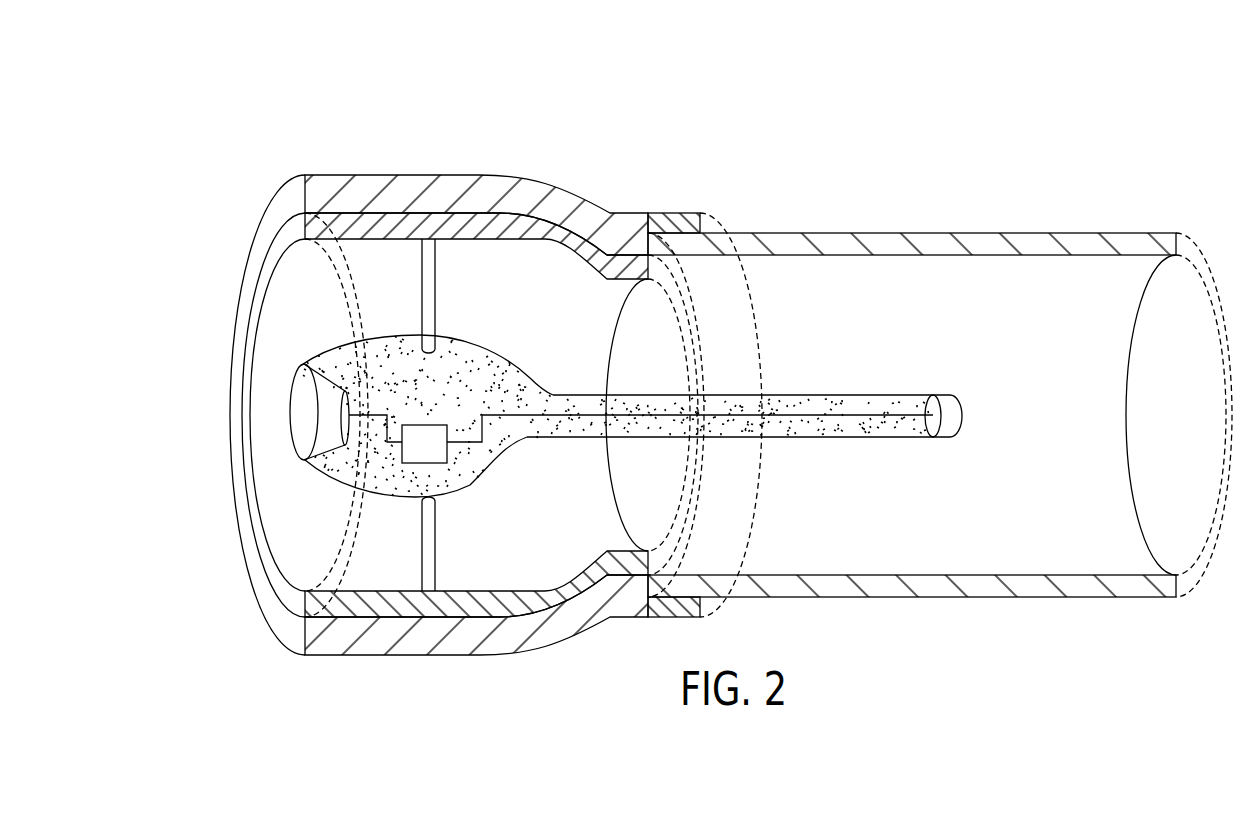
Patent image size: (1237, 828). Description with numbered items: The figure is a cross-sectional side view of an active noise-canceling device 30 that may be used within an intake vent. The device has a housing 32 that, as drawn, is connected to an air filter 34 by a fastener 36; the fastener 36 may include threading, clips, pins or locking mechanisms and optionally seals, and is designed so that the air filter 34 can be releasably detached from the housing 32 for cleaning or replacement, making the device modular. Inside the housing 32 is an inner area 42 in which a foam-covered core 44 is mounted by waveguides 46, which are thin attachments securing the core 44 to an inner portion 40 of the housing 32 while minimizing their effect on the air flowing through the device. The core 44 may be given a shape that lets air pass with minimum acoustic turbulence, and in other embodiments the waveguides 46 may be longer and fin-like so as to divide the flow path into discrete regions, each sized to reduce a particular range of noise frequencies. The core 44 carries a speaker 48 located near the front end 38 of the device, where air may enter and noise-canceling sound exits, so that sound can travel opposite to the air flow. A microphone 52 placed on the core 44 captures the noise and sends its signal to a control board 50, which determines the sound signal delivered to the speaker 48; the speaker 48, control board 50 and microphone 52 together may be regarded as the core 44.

The active noise-canceling device 30 is at (338, 118).
The housing 32 is at (393, 175).
The air filter 34 is at (933, 233).
The fastener 36 is at (668, 213).
The front end 38 is at (272, 262).
The inner portion 40 is at (480, 177).
The inner area 42 is at (578, 316).
The core 44 is at (478, 358).
The waveguides 46 is at (437, 293).
The speaker 48 is at (293, 391).
The control board 50 is at (450, 460).
The microphone 52 is at (945, 395).